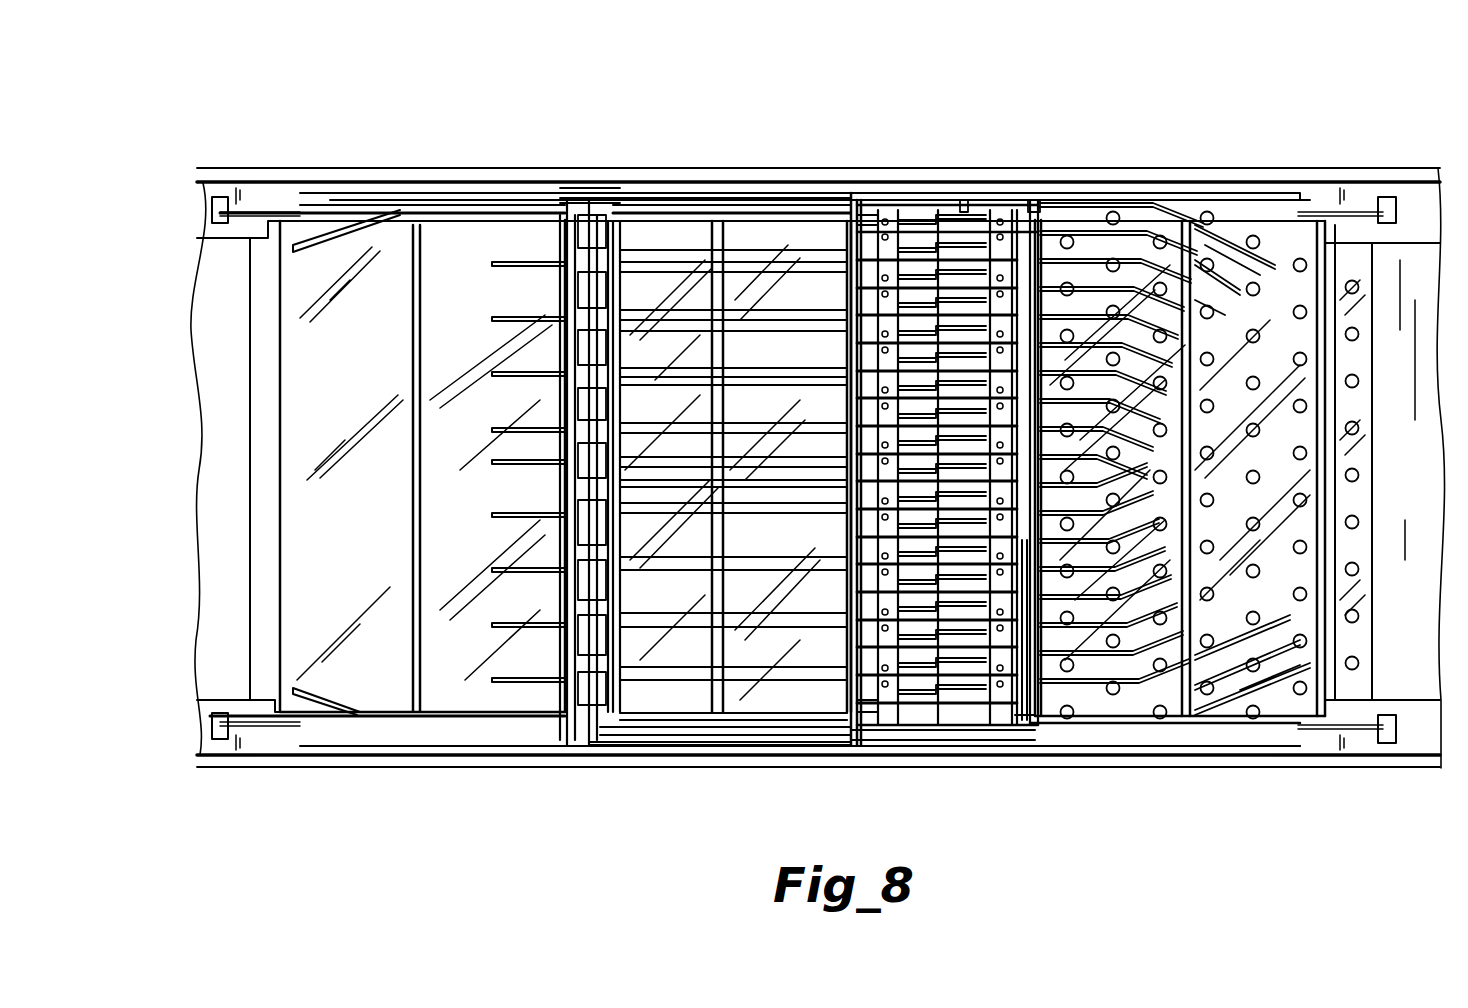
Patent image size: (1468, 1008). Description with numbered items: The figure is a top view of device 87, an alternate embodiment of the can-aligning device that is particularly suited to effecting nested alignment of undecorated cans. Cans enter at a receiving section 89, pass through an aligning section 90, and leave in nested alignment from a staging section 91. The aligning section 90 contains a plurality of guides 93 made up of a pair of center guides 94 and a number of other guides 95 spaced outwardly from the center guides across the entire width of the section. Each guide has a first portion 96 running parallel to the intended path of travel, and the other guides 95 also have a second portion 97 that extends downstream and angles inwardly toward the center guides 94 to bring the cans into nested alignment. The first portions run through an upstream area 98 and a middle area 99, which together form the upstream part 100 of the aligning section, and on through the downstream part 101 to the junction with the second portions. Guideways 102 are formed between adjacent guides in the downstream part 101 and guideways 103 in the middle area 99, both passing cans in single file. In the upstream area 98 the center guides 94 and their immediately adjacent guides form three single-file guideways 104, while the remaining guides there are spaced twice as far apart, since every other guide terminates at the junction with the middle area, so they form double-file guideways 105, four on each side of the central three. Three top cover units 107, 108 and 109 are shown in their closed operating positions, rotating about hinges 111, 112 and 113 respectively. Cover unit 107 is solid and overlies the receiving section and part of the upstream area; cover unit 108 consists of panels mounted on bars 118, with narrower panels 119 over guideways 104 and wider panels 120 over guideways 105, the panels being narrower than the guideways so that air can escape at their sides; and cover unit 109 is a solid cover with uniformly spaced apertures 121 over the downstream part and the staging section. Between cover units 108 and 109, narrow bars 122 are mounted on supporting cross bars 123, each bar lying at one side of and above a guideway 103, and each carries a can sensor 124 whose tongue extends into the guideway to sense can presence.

The device 87 is at (586, 138).
The receiving section 89 is at (316, 168).
The aligning section 90 is at (826, 172).
The staging section 91 is at (1329, 175).
The guides 93 is at (1006, 210).
The center guides 94 is at (496, 486).
The other guides 95 is at (500, 626).
The first portion 96 is at (1112, 205).
The second portion 97 is at (1184, 235).
The upstream area 98 is at (648, 725).
The middle area 99 is at (951, 742).
The upstream part 100 is at (718, 806).
The downstream part 101 is at (1183, 803).
The guideways 102 is at (1083, 690).
The guideways 103 is at (987, 670).
The guideways 104 is at (502, 500).
The guideways 105 is at (536, 284).
The top cover unit 107 is at (486, 700).
The top cover unit 108 is at (752, 200).
The top cover unit 109 is at (1271, 700).
The hinge 111 is at (222, 218).
The hinge 112 is at (870, 186).
The hinge 113 is at (1391, 197).
The bars 118 is at (659, 200).
The narrower panels 119 is at (736, 445).
The wider panels 120 is at (813, 652).
The apertures 121 is at (1212, 262).
The narrow bars 122 is at (941, 200).
The supporting cross bars 123 is at (1034, 200).
The can sensor 124 is at (963, 200).